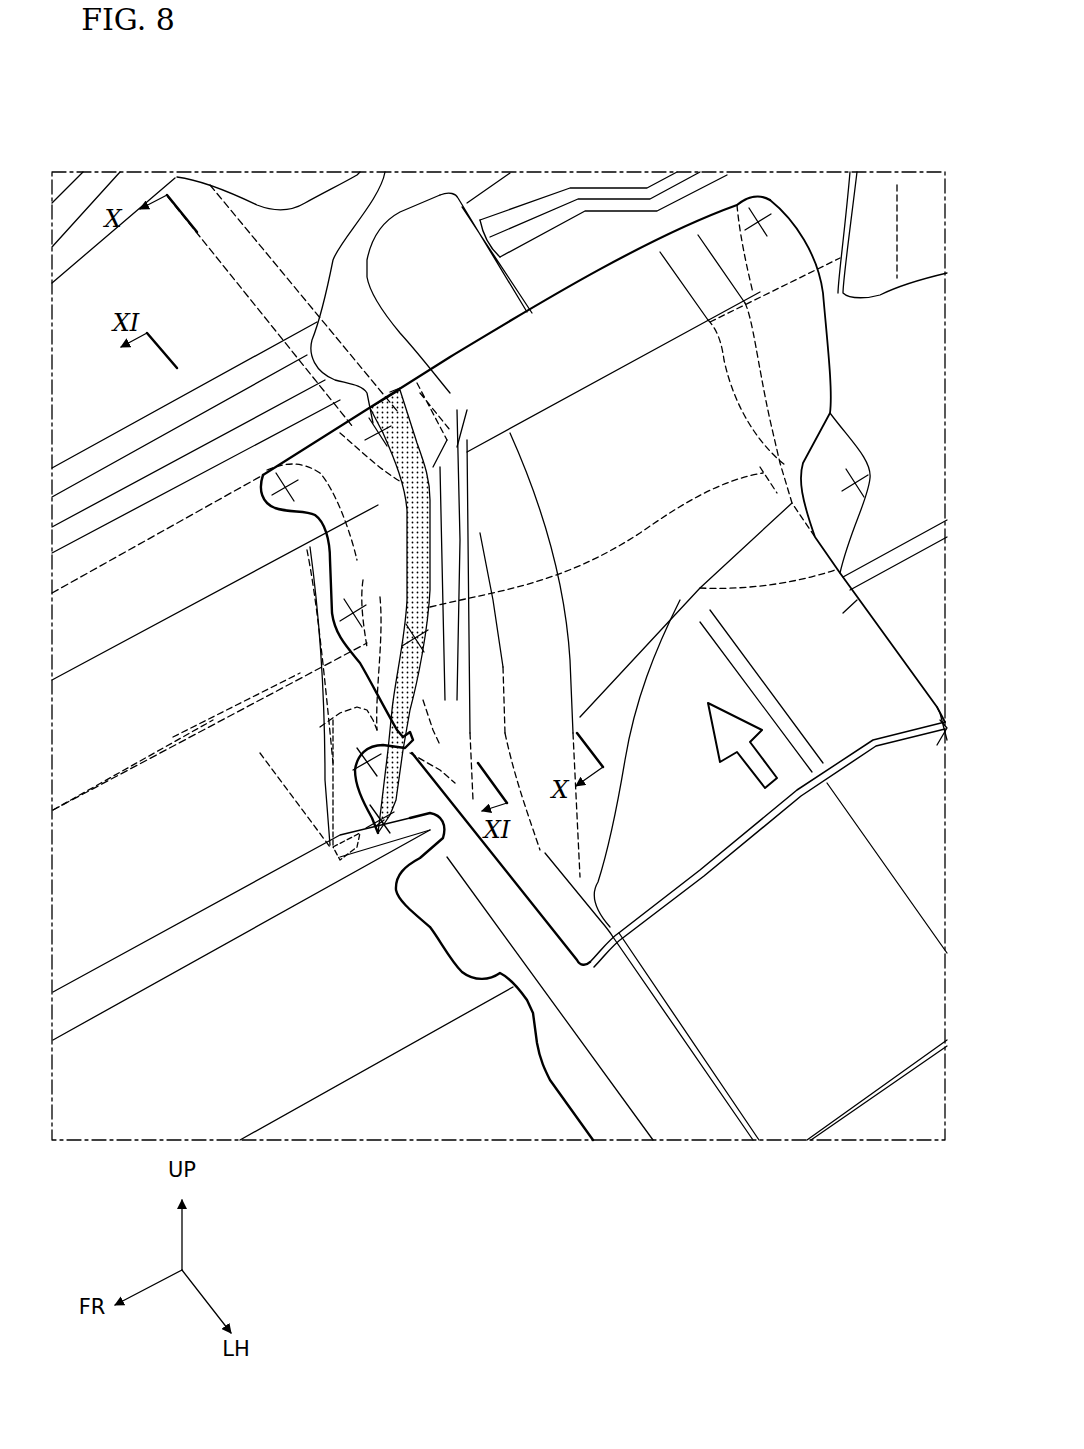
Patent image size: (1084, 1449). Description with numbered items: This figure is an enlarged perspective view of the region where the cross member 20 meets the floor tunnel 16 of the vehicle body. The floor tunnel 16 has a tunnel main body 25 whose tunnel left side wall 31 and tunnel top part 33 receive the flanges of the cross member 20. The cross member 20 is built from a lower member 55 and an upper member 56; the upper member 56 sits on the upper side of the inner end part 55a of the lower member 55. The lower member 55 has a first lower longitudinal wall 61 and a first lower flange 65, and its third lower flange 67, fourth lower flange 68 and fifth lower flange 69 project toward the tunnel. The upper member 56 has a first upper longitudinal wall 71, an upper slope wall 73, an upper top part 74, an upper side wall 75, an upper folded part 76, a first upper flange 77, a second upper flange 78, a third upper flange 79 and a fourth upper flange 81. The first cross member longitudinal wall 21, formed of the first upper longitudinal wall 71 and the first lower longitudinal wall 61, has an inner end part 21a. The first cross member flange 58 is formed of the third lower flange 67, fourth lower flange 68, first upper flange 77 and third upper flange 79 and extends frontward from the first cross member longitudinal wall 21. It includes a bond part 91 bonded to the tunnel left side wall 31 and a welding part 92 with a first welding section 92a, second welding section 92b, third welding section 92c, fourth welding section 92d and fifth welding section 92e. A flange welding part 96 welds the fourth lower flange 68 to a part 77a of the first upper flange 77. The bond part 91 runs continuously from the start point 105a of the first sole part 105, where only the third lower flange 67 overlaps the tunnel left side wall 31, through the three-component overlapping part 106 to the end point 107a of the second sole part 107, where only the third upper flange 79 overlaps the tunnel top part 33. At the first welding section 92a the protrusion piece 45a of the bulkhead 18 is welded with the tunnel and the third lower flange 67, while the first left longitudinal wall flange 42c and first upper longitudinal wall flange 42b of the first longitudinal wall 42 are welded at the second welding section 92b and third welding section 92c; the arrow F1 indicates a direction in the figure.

The floor tunnel 16 is at (170, 160).
The bulkhead 18 is at (333, 330).
The cross member 20 is at (621, 255).
The first cross member longitudinal wall 21 is at (383, 1095).
The inner end part 21a is at (430, 740).
The tunnel main body 25 is at (285, 263).
The tunnel left side wall 31 is at (150, 710).
The tunnel top part 33 is at (258, 465).
The first longitudinal wall 42 is at (260, 312).
The first upper longitudinal wall flange 42b is at (207, 257).
The first left longitudinal wall flange 42c is at (347, 767).
The protrusion piece 45a is at (330, 847).
The lower member 55 is at (940, 742).
The inner end part 55a is at (805, 797).
The upper member 56 is at (847, 613).
The first cross member flange 58 is at (340, 578).
The first lower longitudinal wall 61 is at (610, 1043).
The first lower flange 65 is at (513, 987).
The third lower flange 67 is at (367, 827).
The fourth lower flange 68 is at (430, 587).
The fifth lower flange 69 is at (840, 460).
The first upper longitudinal wall 71 is at (493, 883).
The upper slope wall 73 is at (707, 670).
The upper top part 74 is at (887, 690).
The upper side wall 75 is at (653, 480).
The upper folded part 76 is at (580, 302).
The first upper flange 77 is at (363, 647).
The part of the first upper flange 77a is at (418, 642).
The second upper flange 78 is at (813, 340).
The third upper flange 79 is at (318, 470).
The fourth upper flange 81 is at (738, 222).
The bond part 91 is at (450, 527).
The welding part 92 is at (333, 612).
The first welding section 92a is at (380, 823).
The second welding section 92b is at (357, 763).
The third welding section 92c is at (395, 390).
The fourth welding section 92d is at (357, 607).
The fifth welding section 92e is at (287, 487).
The flange welding part 96 is at (417, 640).
The first sole part 105 is at (328, 848).
The start point 105a is at (397, 827).
The three-component overlapping part 106 is at (407, 633).
The second sole part 107 is at (370, 423).
The end point 107a is at (400, 420).
The load direction F1 is at (753, 763).